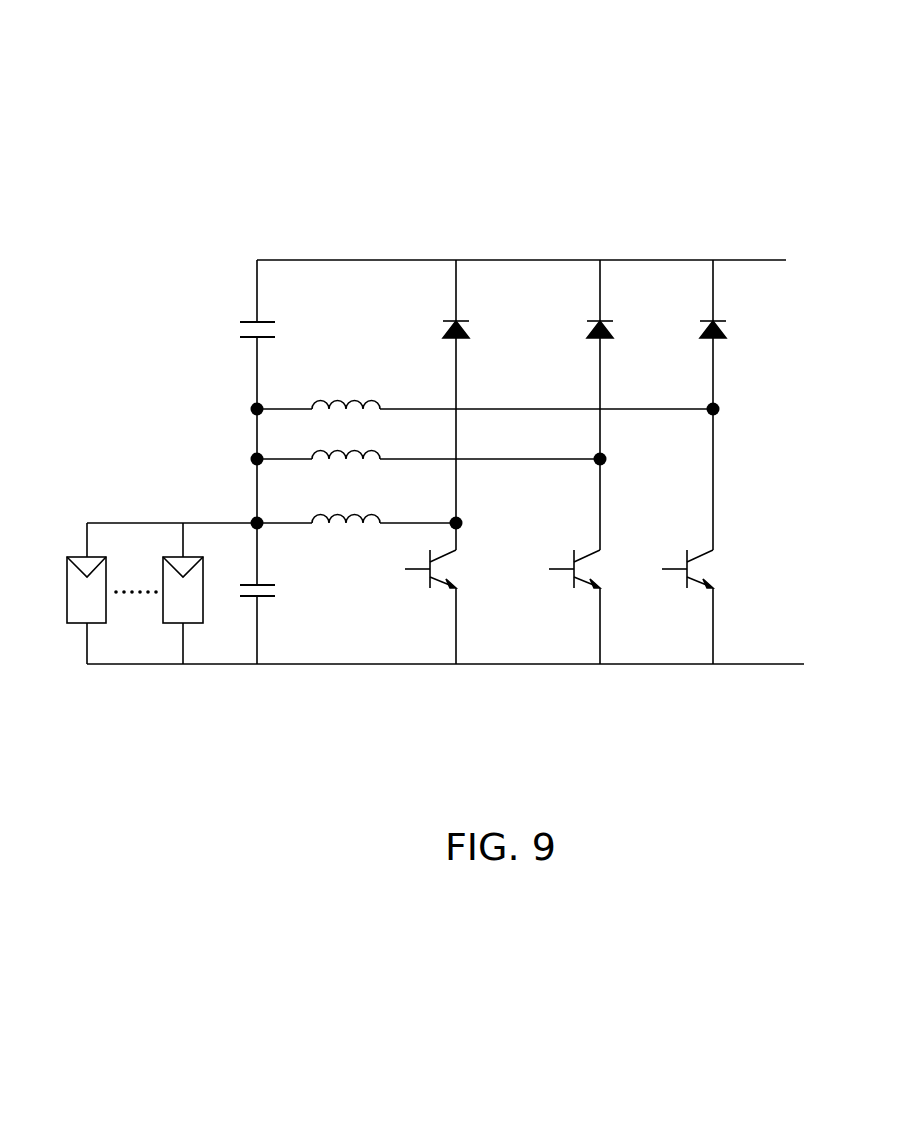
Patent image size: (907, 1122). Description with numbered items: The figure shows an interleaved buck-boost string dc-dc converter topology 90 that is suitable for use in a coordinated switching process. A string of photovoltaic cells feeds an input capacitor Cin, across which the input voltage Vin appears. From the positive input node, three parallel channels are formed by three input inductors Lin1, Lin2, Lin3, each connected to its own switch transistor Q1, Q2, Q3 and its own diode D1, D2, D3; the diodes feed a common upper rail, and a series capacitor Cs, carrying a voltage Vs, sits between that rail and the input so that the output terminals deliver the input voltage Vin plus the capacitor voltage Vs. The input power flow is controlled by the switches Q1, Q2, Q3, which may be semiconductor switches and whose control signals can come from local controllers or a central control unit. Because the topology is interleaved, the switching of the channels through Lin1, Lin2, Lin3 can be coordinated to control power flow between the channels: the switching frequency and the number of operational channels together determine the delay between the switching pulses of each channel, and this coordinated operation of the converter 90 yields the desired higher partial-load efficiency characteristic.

The interleaved buck-boost string dc-dc converter topology 90 is at (463, 177).
The series capacitor Cs is at (246, 311).
The series capacitor voltage Vs is at (298, 324).
The input capacitor Cin is at (245, 572).
The input voltage Vin is at (301, 593).
The first input inductor Lin1 is at (356, 503).
The second input inductor Lin2 is at (428, 439).
The third input inductor Lin3 is at (485, 389).
The first diode D1 is at (475, 343).
The second diode D2 is at (617, 343).
The third diode D3 is at (732, 343).
The first transistor switch Q1 is at (449, 578).
The second transistor switch Q2 is at (591, 578).
The third transistor switch Q3 is at (706, 578).